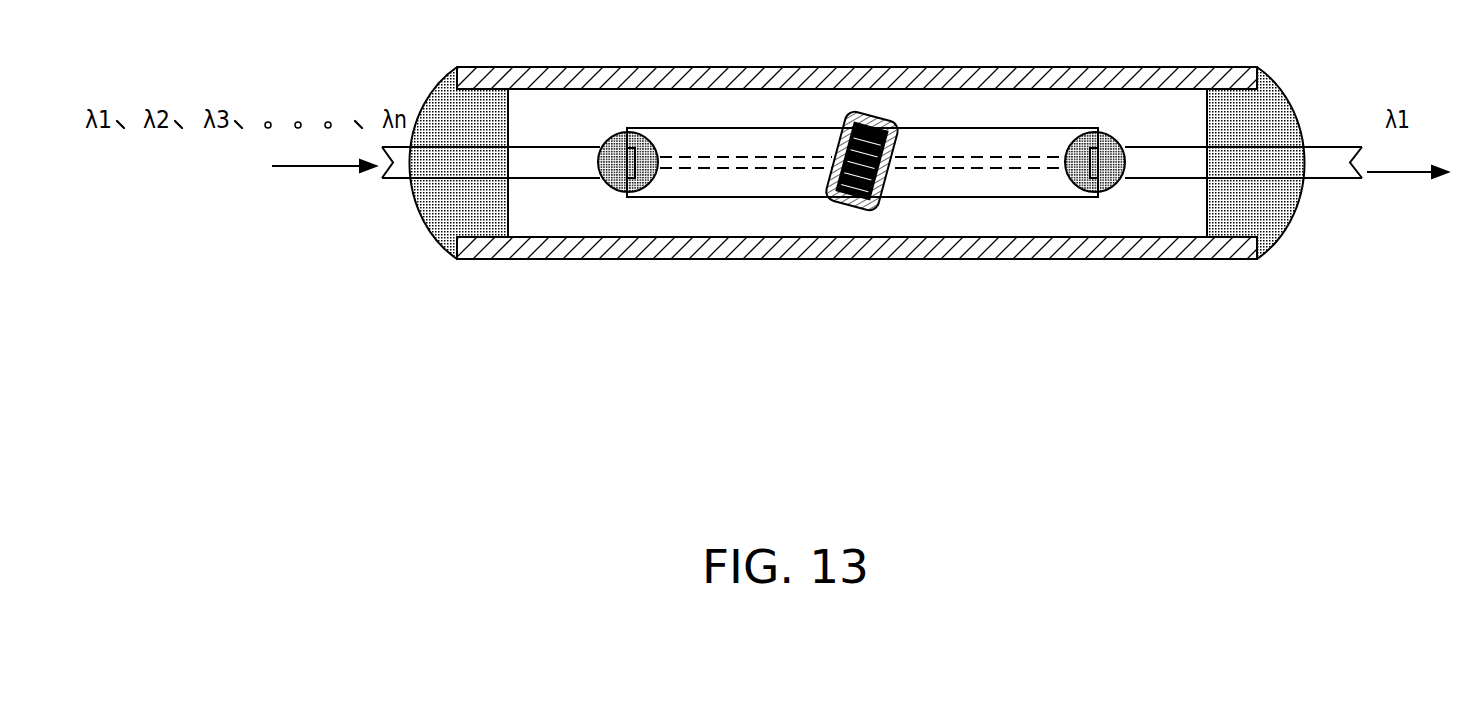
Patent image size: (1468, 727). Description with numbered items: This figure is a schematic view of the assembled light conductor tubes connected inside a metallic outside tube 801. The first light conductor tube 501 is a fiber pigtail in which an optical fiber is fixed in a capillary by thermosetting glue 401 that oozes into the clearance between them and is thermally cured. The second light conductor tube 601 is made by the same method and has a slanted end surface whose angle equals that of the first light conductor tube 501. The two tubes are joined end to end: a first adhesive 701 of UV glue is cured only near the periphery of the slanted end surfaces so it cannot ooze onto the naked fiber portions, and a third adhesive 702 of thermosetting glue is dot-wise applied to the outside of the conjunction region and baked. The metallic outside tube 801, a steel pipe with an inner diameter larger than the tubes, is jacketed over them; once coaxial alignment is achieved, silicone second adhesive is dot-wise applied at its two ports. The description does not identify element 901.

The thermosetting glue 401 is at (613, 187).
The first light conductor tube 501 is at (722, 197).
The second light conductor tube 601 is at (1028, 197).
The first adhesive 701 is at (873, 207).
The third adhesive 702 is at (833, 205).
The metallic outside tube 801 is at (490, 250).
The second end cap 901 is at (1270, 242).